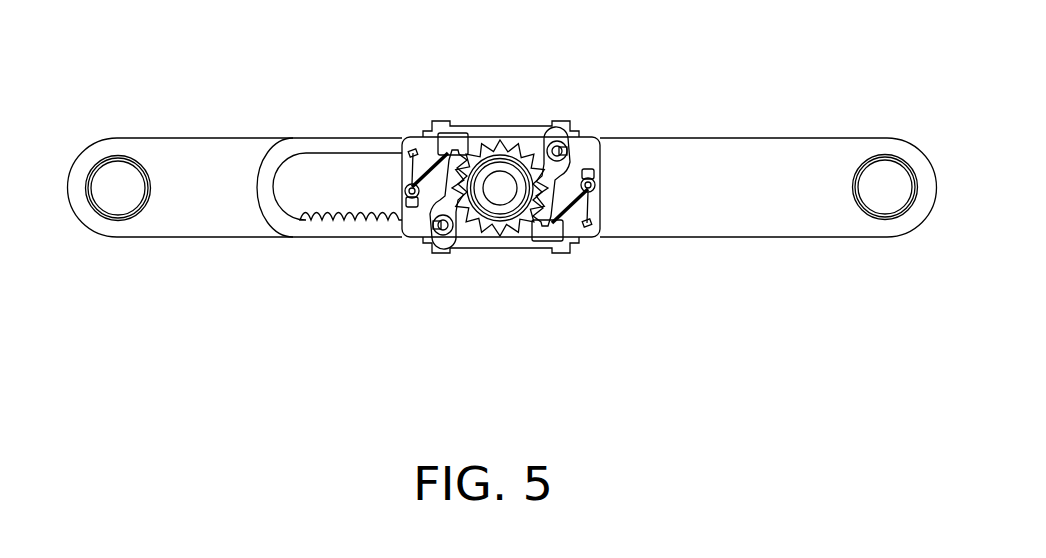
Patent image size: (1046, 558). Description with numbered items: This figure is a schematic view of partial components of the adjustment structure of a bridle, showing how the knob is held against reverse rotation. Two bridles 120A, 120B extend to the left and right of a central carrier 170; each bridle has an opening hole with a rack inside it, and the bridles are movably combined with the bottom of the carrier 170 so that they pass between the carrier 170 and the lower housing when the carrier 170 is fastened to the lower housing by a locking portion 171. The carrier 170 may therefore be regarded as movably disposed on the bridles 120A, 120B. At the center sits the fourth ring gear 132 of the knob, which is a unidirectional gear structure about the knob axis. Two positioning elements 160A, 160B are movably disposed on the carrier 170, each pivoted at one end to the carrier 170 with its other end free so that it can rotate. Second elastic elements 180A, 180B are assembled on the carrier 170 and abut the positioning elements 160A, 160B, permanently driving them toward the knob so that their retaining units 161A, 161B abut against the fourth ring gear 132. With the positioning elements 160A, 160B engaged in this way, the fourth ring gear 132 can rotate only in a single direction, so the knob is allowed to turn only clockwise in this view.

The bridle 120A is at (783, 160).
The bridle 120B is at (158, 227).
The fourth ring gear 132 is at (538, 150).
The positioning element 160A is at (578, 146).
The positioning element 160B is at (432, 214).
The retaining unit 161A is at (567, 163).
The retaining unit 161B is at (442, 197).
The carrier 170 is at (490, 131).
The locking portion 171 is at (436, 121).
The second elastic element 180A is at (596, 208).
The second elastic element 180B is at (402, 162).